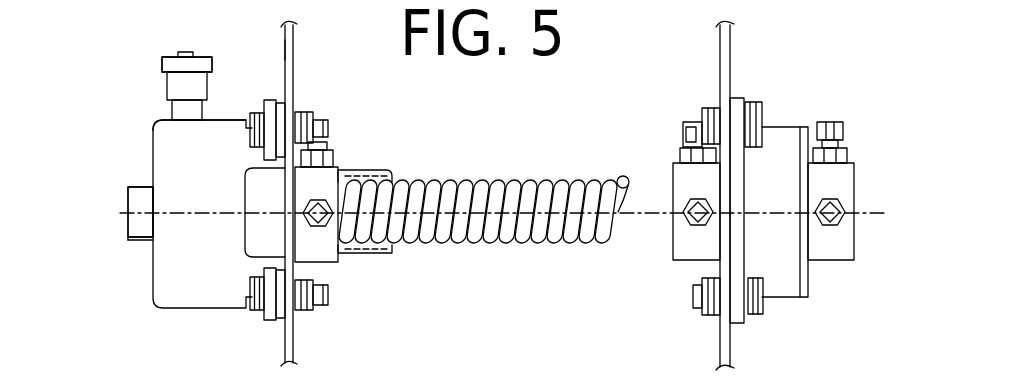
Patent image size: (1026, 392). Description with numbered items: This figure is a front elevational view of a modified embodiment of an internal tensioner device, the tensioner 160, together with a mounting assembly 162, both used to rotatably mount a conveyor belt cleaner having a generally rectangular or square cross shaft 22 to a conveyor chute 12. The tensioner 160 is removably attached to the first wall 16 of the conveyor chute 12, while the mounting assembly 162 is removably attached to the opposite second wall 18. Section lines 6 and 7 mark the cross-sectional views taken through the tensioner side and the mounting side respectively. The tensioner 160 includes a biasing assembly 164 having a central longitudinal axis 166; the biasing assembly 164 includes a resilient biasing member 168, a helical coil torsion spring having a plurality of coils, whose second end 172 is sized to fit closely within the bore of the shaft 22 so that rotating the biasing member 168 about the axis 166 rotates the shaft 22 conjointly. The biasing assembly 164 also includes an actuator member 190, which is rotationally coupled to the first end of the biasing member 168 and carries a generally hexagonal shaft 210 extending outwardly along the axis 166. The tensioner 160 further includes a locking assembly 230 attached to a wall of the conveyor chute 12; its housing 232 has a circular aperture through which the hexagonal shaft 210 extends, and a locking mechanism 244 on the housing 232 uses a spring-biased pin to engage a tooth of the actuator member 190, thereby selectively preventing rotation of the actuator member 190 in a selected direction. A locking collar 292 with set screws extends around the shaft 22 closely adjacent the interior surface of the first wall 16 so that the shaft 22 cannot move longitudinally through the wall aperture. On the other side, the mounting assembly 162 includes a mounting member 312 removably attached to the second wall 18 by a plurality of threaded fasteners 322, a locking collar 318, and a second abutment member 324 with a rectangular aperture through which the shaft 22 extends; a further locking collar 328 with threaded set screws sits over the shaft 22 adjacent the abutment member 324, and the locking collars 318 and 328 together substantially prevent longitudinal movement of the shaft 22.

The section line 6- 6 is at (148, 31).
The section line 7- 7 is at (653, 95).
The conveyor chute 12 is at (277, 22).
The first wall 16 is at (294, 50).
The second wall 18 is at (730, 43).
The cross shaft 22 is at (383, 248).
The tensioner 160 is at (483, 195).
The mounting assembly 162 is at (764, 202).
The biasing assembly 164 is at (483, 216).
The central longitudinal axis 166 is at (498, 218).
The resilient biasing member 168 is at (453, 243).
The second end 172 is at (617, 254).
The actuator member 190 is at (125, 180).
The hexagonal shaft 210 is at (135, 238).
The locking assembly 230 is at (150, 98).
The housing 232 is at (192, 294).
The locking mechanism 244 is at (203, 56).
The locking collar 292 is at (318, 255).
The mounting member 312 is at (780, 288).
The locking collar 318 is at (683, 242).
The threaded fasteners 322 is at (696, 297).
The second abutment member 324 is at (805, 278).
The locking collar 328 is at (840, 182).